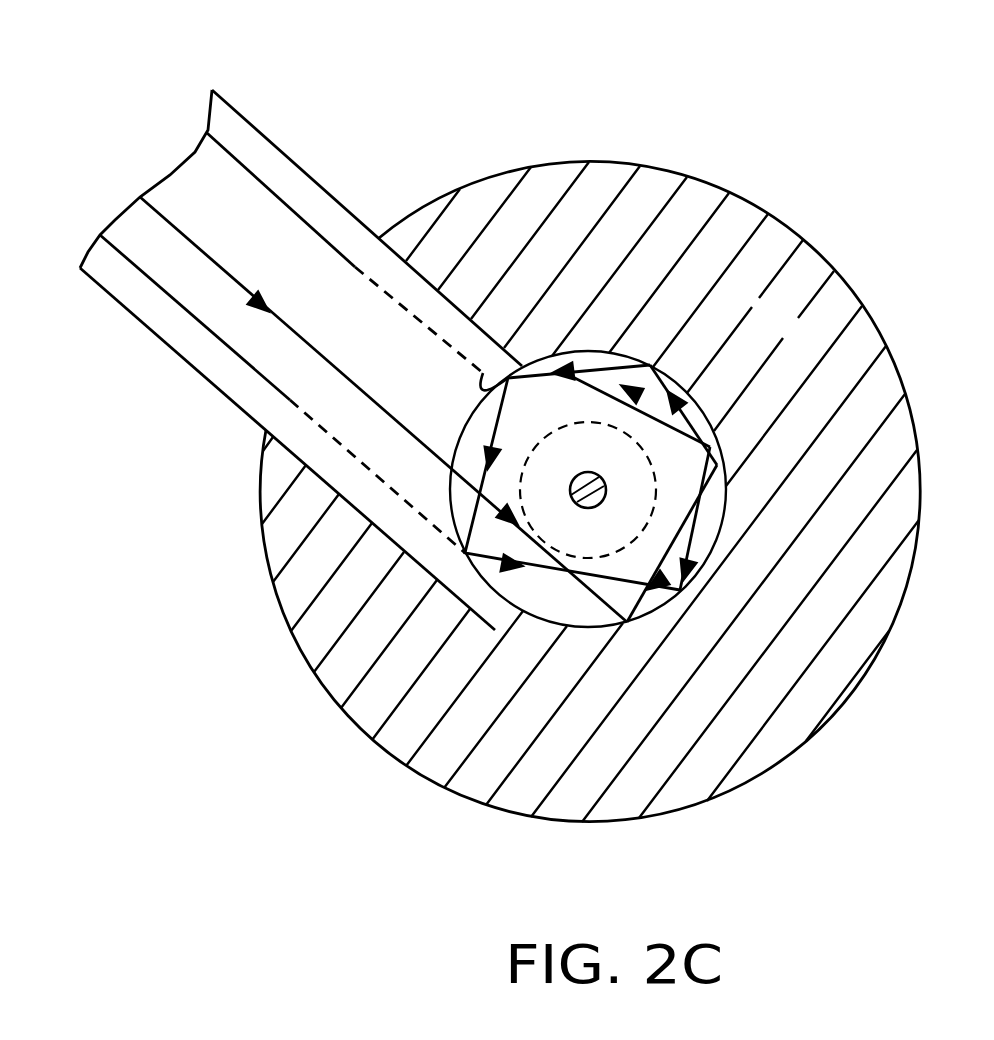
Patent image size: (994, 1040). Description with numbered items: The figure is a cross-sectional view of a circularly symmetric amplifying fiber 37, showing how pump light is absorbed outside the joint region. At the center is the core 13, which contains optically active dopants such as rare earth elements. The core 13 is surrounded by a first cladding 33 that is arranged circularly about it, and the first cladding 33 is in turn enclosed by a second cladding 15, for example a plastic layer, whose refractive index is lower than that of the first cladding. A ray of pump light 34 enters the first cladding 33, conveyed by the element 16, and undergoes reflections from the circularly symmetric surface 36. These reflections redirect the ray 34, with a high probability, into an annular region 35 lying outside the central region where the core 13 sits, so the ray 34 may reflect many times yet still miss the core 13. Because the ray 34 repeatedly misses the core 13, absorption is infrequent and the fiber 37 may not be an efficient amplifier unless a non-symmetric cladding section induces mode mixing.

The core 13 is at (589, 508).
The second cladding 15 is at (790, 338).
The tube 16 is at (306, 170).
The first cladding 33 is at (549, 356).
The ray of pump light 34 is at (196, 246).
The annular region 35 is at (700, 537).
The circularly symmetric surface 36 is at (510, 366).
The fiber 37 is at (606, 90).